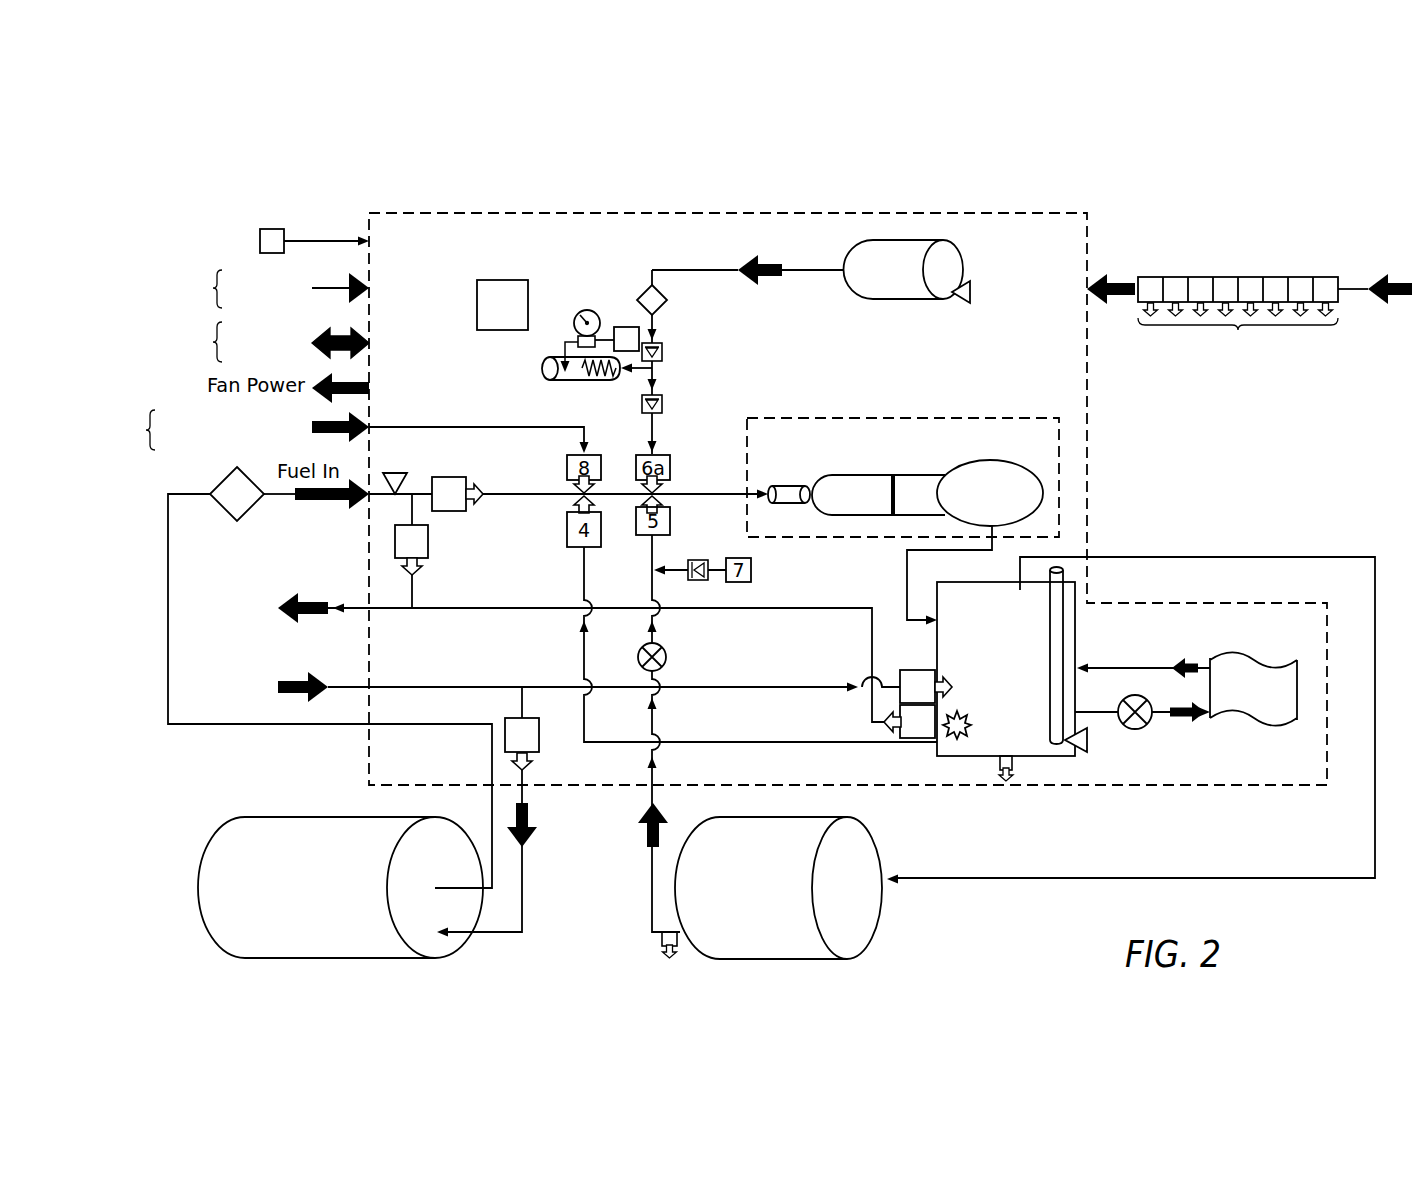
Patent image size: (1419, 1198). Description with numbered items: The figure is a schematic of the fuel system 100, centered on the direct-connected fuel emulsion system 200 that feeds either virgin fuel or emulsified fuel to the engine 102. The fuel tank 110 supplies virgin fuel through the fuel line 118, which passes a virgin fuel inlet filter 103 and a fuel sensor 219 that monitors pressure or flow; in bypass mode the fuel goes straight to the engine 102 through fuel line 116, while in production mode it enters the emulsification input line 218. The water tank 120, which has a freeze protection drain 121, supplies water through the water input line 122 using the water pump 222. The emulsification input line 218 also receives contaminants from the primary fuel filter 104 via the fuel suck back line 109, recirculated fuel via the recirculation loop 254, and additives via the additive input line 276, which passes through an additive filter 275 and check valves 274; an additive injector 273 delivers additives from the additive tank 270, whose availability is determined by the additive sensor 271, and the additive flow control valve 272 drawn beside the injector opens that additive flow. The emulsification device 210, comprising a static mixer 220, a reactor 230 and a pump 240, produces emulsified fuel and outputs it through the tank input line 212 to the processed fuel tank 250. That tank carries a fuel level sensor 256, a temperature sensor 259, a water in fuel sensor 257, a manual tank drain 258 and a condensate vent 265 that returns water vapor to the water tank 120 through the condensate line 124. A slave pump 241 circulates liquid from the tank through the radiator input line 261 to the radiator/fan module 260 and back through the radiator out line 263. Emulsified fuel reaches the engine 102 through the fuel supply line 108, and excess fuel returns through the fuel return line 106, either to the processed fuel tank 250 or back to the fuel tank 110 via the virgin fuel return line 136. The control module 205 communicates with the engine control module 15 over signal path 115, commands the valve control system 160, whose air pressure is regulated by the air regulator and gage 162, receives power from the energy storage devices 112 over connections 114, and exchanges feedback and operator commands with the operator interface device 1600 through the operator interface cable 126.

The fuel system 100 is at (166, 236).
The engine control module 15 is at (262, 229).
The signal path 115 is at (330, 240).
The energy storage devices 112 is at (241, 288).
The connections 114 is at (369, 296).
The operator interface device 1600 is at (235, 340).
The operator interface cable 126 is at (369, 352).
The primary fuel filter 104 is at (239, 430).
The fuel suck back line 109 is at (445, 427).
The control module 205 is at (488, 280).
The air regulator and gage 162 is at (584, 310).
The valve 6 272 is at (623, 327).
The additive injector 273 is at (581, 382).
The additive filter 275 is at (667, 300).
The check valves 274 is at (662, 352).
The additive input line 276 is at (655, 427).
The additive tank 270 is at (925, 299).
The additive sensor 271 is at (975, 292).
The virgin fuel inlet filter 103 is at (218, 484).
The fuel line 118 is at (168, 578).
The fuel sensor 219 is at (395, 473).
The fuel line 116 is at (415, 600).
The emulsification input line 218 is at (498, 494).
The recirculation loop 254 is at (745, 742).
The water input line 122 is at (657, 641).
The water pump 222 is at (668, 656).
The fuel supply line 108 is at (490, 608).
The engine 102 is at (292, 680).
The fuel return line 106 is at (415, 687).
The virgin fuel return line 136 is at (522, 888).
The fuel tank 110 is at (265, 960).
The water tank 120 is at (822, 960).
The freeze protection drain 121 is at (662, 941).
The static mixer 220 is at (792, 486).
The reactor 230 is at (878, 475).
The pump 240 is at (965, 463).
The tank input line 212 is at (907, 565).
The emulsification device 210 is at (1009, 418).
The fuel emulsion system 200 is at (1076, 211).
The processed fuel tank 250 is at (937, 638).
The condensate vent 265 is at (1018, 559).
The condensate line 124 is at (1253, 558).
The fuel level sensor 256 is at (1050, 625).
The temperature sensor 259 is at (958, 742).
The manual tank drain 258 is at (1015, 770).
The water in fuel sensor 257 is at (1090, 750).
The radiator out line 263 is at (1150, 668).
The radiator input line 261 is at (1105, 712).
The slave pump 241 is at (1150, 723).
The radiator/fan module 260 is at (1258, 660).
The valve control system 160 is at (1250, 317).